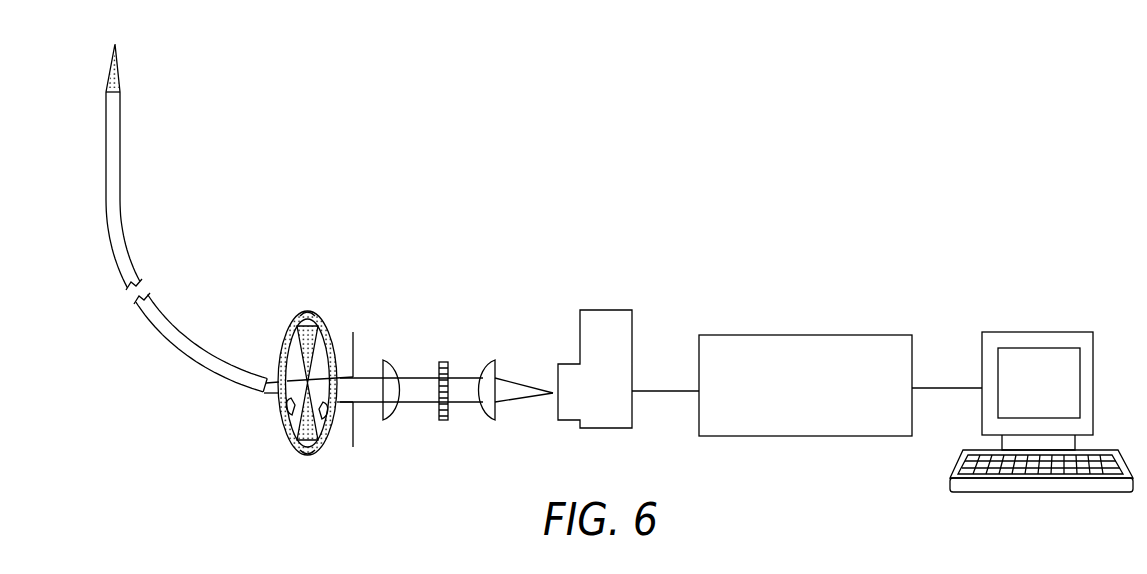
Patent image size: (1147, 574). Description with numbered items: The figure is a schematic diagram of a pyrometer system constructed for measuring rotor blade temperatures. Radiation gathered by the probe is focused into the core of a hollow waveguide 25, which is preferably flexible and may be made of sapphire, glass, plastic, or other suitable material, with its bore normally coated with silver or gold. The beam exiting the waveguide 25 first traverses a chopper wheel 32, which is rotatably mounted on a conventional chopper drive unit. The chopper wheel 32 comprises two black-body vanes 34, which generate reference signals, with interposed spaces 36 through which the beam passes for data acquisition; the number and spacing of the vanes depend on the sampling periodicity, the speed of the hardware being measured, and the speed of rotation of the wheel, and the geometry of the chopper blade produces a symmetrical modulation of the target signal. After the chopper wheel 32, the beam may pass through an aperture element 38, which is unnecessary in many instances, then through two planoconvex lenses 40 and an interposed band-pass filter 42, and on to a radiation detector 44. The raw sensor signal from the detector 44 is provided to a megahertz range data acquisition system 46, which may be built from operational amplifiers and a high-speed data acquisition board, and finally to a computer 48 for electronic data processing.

The hollow waveguide 25 is at (117, 128).
The chopper wheel 32 is at (326, 312).
The black-body vanes 34 is at (280, 492).
The spaces 36 is at (284, 428).
The aperture element 38 is at (354, 346).
The planoconvex lenses 40 is at (484, 421).
The band-pass filter 42 is at (447, 362).
The radiation detector 44 is at (632, 310).
The megahertz range data acquisition system 46 is at (805, 357).
The computer 48 is at (1041, 385).